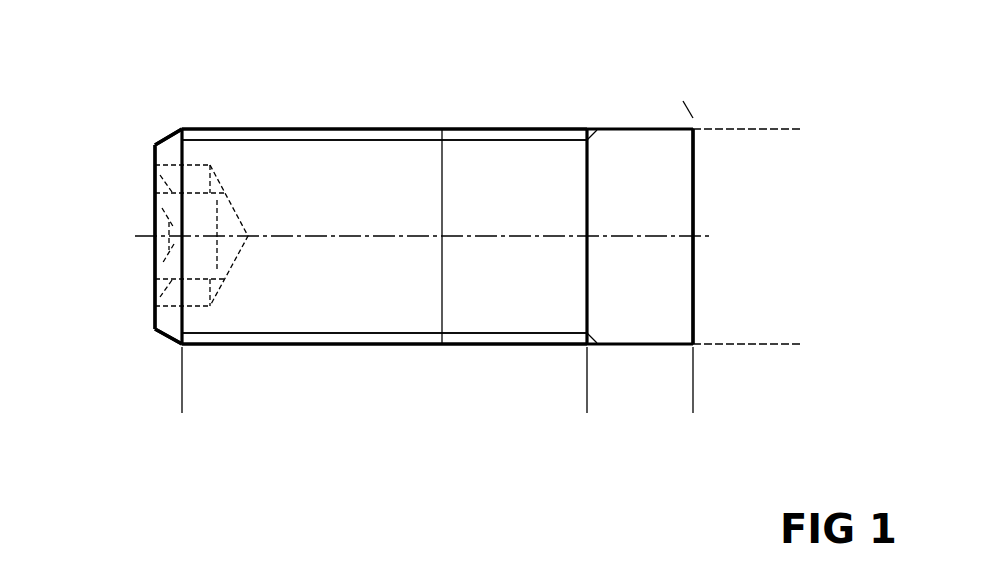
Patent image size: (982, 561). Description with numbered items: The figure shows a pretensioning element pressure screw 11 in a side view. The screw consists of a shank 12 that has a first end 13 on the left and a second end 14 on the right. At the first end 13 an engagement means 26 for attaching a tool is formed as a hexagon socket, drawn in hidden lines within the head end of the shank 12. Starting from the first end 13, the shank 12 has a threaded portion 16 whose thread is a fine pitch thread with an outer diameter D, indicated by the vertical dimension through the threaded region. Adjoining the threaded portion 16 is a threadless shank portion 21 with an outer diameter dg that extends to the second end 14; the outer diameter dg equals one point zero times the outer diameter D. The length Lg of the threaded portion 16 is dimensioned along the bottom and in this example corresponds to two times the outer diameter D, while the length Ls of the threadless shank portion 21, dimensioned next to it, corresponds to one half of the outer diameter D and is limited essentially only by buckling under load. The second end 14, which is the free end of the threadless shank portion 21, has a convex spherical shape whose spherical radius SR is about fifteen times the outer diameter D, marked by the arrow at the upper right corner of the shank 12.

The pretensioning element pressure screw 11 is at (158, 64).
The shank 12 is at (522, 163).
The first end 13 is at (153, 284).
The second end 14 is at (693, 147).
The threaded portion 16 is at (272, 129).
The threadless shank portion 21 is at (622, 142).
The engagement means 26 is at (153, 204).
The spherical radius SR is at (699, 106).
The outer diameter of the threaded portion D is at (442, 361).
The outer diameter of the threadless shank portion dg is at (790, 129).
The length of the threaded portion Lg is at (587, 402).
The length of the threadless shank section Ls is at (693, 402).